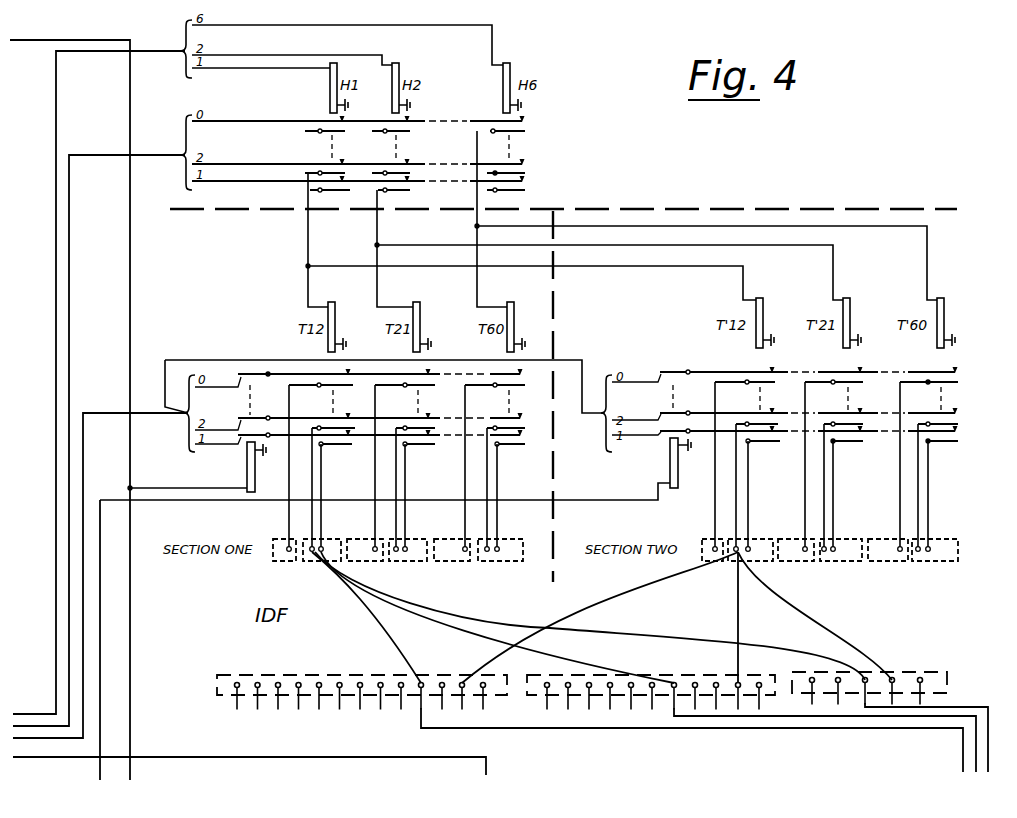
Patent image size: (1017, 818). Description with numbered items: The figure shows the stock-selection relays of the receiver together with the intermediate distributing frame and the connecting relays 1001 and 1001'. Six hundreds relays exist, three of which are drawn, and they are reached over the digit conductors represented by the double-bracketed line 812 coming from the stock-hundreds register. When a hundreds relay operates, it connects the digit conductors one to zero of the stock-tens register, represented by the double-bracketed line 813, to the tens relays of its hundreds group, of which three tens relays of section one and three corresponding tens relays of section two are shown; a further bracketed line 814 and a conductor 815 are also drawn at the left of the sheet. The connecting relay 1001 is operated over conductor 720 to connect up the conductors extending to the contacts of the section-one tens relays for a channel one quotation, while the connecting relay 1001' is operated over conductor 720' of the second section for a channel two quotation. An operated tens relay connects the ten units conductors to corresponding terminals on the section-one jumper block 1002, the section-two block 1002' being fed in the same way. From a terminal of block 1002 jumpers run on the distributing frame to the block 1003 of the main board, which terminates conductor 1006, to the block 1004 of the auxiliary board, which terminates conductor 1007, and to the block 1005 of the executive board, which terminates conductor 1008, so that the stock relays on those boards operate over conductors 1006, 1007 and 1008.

The conductor 720 is at (70, 401).
The conductor of the second section 720' is at (135, 640).
The double-bracketed line 812 is at (100, 58).
The double-bracketed line 813 is at (109, 162).
The control lead to section contact rows 814 is at (119, 420).
The return lead to distributing frame 815 is at (181, 757).
The connecting relay 1001 is at (235, 467).
The connecting relay 1001' is at (658, 463).
The jumper block 1002 is at (398, 560).
The jumper block 1002' is at (830, 560).
The block of the main board 1003 is at (362, 682).
The block of the auxiliary board 1004 is at (650, 682).
The block of the executive board 1005 is at (891, 679).
The conductor 1006 is at (504, 728).
The conductor 1007 is at (804, 720).
The conductor 1008 is at (966, 708).